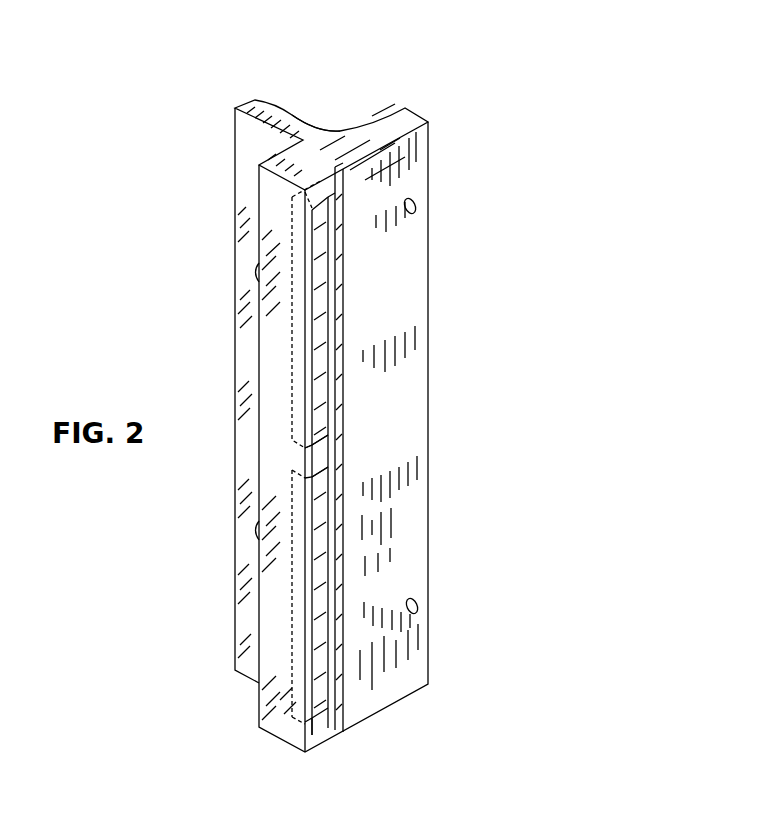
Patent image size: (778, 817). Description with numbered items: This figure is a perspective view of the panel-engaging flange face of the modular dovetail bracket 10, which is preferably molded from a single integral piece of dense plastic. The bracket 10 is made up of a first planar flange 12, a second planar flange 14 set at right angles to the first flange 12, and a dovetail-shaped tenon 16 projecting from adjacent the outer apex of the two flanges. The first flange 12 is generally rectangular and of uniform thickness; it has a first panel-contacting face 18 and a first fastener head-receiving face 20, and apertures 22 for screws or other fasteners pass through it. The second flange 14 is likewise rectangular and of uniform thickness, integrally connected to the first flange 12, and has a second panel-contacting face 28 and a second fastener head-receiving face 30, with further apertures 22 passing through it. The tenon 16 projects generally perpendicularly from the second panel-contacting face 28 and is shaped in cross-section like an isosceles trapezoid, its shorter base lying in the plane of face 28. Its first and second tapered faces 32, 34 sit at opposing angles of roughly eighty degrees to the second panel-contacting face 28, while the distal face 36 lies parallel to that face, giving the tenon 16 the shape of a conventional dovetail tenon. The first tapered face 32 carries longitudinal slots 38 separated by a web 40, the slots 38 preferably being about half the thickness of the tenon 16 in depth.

The modular dovetail bracket 10 is at (548, 54).
The first planar flange 12 is at (440, 127).
The second planar flange 14 is at (228, 91).
The dovetail-shaped tenon 16 is at (266, 196).
The first panel-contacting face 18 is at (423, 293).
The first fastener head-receiving face 20 is at (372, 117).
The apertures 22 is at (415, 213).
The second panel-contacting face 28 is at (247, 132).
The second fastener head-receiving face 30 is at (290, 101).
The first tapered face 32 is at (332, 189).
The second tapered face 34 is at (261, 160).
The distal face 36 is at (262, 382).
The longitudinal slots 38 is at (323, 297).
The web 40 is at (316, 469).